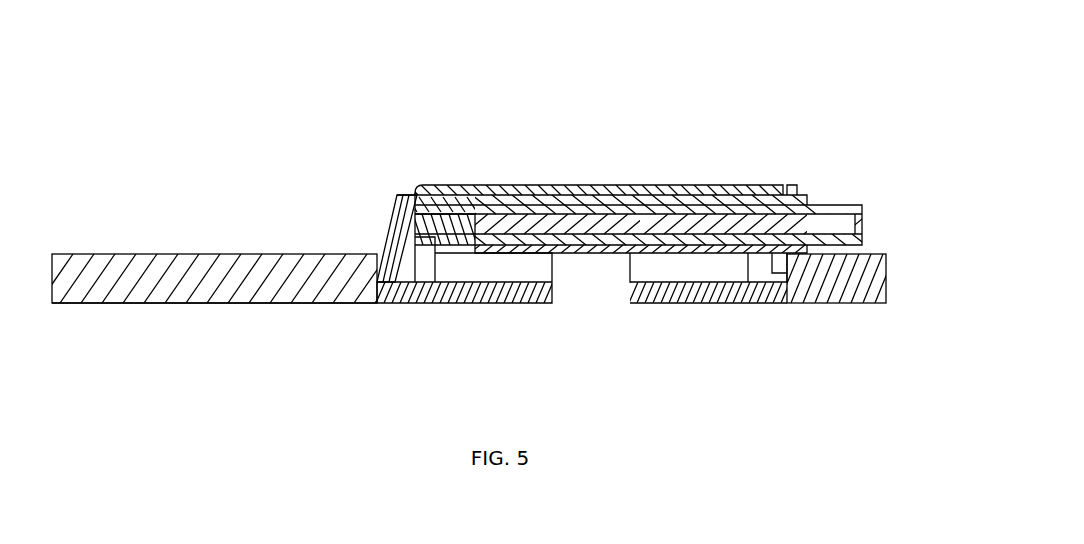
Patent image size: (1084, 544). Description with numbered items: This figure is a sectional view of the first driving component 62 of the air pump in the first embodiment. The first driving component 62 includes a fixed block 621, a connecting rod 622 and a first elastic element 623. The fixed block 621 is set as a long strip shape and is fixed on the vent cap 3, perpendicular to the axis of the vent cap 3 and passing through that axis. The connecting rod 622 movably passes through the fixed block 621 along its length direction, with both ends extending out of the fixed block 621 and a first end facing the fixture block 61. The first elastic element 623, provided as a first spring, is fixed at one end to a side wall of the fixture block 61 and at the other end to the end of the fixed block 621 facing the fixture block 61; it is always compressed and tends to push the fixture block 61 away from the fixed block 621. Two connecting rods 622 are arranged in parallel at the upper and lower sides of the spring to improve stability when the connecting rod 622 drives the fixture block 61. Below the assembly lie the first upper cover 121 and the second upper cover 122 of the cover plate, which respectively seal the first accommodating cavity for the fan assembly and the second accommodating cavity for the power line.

The vent cap 3 is at (760, 188).
The fixture block 61 is at (407, 230).
The first driving component 62 is at (742, 95).
The fixed block 621 is at (665, 220).
The connecting rod 622 is at (556, 215).
The first elastic element 623 is at (448, 213).
The first upper cover 121 is at (805, 293).
The second upper cover 122 is at (197, 287).